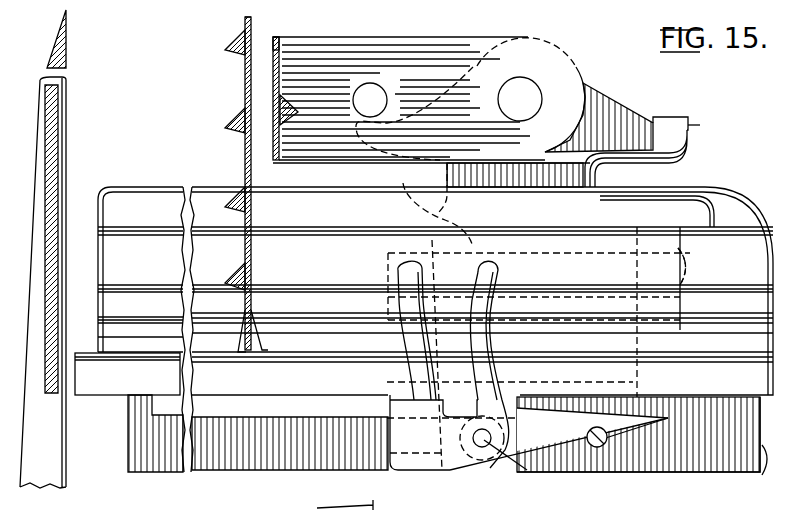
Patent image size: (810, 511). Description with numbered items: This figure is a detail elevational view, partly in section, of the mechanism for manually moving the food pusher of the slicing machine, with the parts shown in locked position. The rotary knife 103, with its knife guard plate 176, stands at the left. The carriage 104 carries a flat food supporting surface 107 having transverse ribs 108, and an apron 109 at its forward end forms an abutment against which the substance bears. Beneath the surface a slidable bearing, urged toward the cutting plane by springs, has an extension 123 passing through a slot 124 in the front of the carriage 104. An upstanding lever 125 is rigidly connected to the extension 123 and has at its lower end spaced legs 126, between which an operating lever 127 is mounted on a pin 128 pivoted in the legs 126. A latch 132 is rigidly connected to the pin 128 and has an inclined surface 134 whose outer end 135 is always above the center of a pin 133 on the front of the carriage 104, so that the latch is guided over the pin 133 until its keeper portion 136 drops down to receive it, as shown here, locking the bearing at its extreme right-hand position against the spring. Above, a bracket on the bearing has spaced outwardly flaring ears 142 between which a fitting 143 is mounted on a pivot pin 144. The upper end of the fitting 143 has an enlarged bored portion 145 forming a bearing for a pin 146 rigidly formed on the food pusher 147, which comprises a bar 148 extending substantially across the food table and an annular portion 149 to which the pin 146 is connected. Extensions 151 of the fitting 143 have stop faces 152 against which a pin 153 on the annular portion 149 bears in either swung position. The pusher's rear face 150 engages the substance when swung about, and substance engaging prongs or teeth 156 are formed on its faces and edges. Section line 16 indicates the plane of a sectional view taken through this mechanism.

The rotary knife 103 is at (63, 87).
The knife guard plate 176 is at (50, 132).
The apron 109 is at (144, 188).
The food supporting surface 107 is at (122, 358).
The transverse ribs 108 is at (158, 358).
The carriage 104 is at (128, 457).
The slot 124 is at (276, 413).
The ears 142 is at (398, 245).
The pivot pin 144 is at (690, 266).
The rear face 150 is at (252, 175).
The prongs or teeth 156 is at (289, 100).
The food pusher 147 is at (243, 75).
The annular portion 149 is at (432, 42).
The bar 148 is at (273, 37).
The pin 153 is at (360, 88).
The pin 146 is at (522, 83).
The bored portion 145 is at (576, 62).
The fitting 143 is at (403, 198).
The stop faces 152 is at (661, 116).
The extensions 151 is at (708, 122).
The lever 125 is at (412, 270).
The operating lever 127 is at (492, 266).
The extension 123 is at (512, 394).
The spaced legs 126 is at (470, 468).
The pin 128 is at (517, 469).
The outer end 135 is at (680, 425).
The latch 132 is at (533, 432).
The inclined surface 134 is at (656, 430).
The keeper portion 136 is at (606, 443).
The pin or stud 133 is at (596, 448).
The section line 16 is at (425, 373).